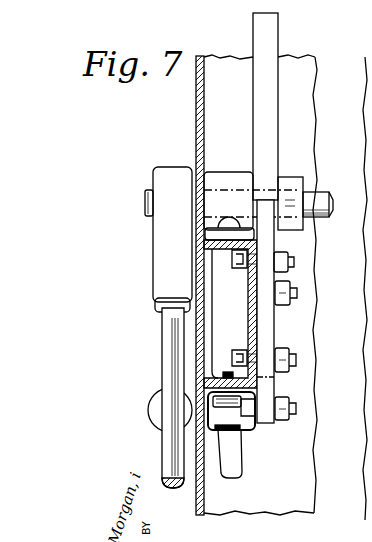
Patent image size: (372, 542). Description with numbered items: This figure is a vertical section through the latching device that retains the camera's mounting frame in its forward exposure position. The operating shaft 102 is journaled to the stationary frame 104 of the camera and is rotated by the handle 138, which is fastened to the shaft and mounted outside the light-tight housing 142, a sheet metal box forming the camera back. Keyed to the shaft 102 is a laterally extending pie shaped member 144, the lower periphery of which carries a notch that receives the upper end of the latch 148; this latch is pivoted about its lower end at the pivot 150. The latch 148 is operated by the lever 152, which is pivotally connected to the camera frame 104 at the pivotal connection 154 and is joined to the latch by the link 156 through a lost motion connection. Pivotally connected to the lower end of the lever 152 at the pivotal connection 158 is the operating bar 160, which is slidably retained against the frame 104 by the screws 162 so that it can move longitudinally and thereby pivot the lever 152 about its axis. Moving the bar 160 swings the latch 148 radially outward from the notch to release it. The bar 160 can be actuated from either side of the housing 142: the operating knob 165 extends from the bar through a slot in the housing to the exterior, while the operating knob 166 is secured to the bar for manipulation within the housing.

The operating shaft 102 is at (325, 195).
The stationary frame 104 is at (299, 88).
The handle 138 is at (164, 344).
The light-tight housing 142 is at (196, 92).
The pie shaped member 144 is at (268, 33).
The latch 148 is at (268, 236).
The pivot 150 is at (285, 360).
The lever 152 is at (265, 330).
The pivotal connection 154 is at (278, 266).
The link 156 is at (282, 310).
The pivotal connection 158 is at (280, 407).
The operating bar 160 is at (256, 426).
The screws 162 is at (232, 365).
The operating knob 165 is at (150, 401).
The operating knob 166 is at (238, 462).